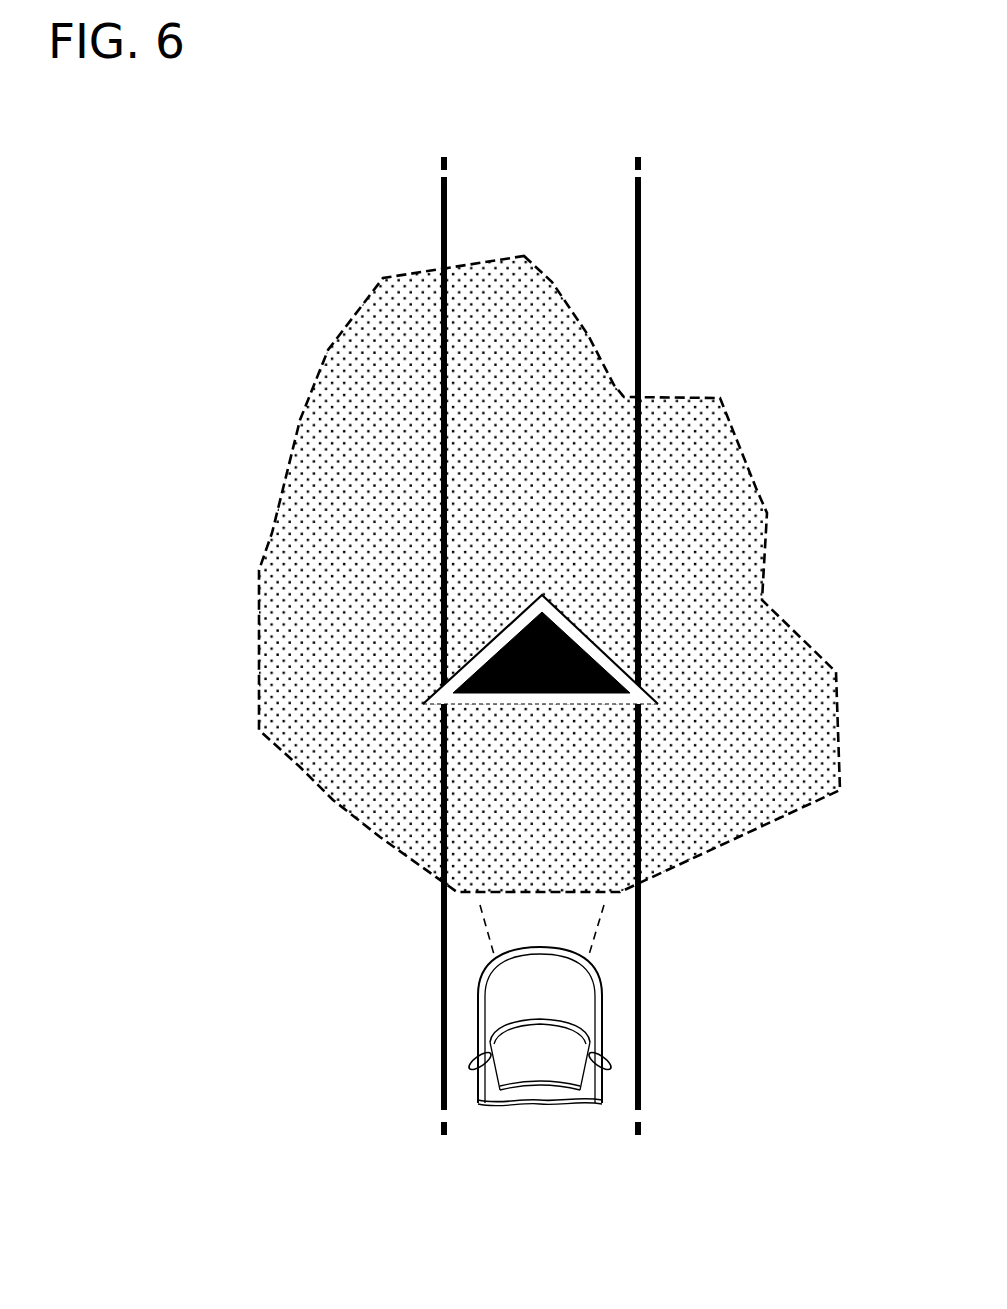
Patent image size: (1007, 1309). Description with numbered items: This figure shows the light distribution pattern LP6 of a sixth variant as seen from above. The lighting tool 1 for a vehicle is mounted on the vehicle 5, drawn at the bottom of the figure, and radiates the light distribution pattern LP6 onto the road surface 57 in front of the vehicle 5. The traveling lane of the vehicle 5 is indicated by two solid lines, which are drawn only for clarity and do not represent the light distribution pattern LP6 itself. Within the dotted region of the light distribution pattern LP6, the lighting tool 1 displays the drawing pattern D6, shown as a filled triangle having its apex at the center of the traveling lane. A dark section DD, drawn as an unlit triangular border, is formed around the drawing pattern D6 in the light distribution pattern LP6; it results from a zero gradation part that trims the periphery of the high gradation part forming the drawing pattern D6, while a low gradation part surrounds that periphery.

The light distribution pattern LP6 is at (314, 340).
The road surface 57 is at (622, 276).
The dark section DD is at (430, 688).
The drawing pattern D6 is at (496, 634).
The vehicle 5 is at (464, 1002).
The lighting tool for a vehicle 1 is at (577, 950).